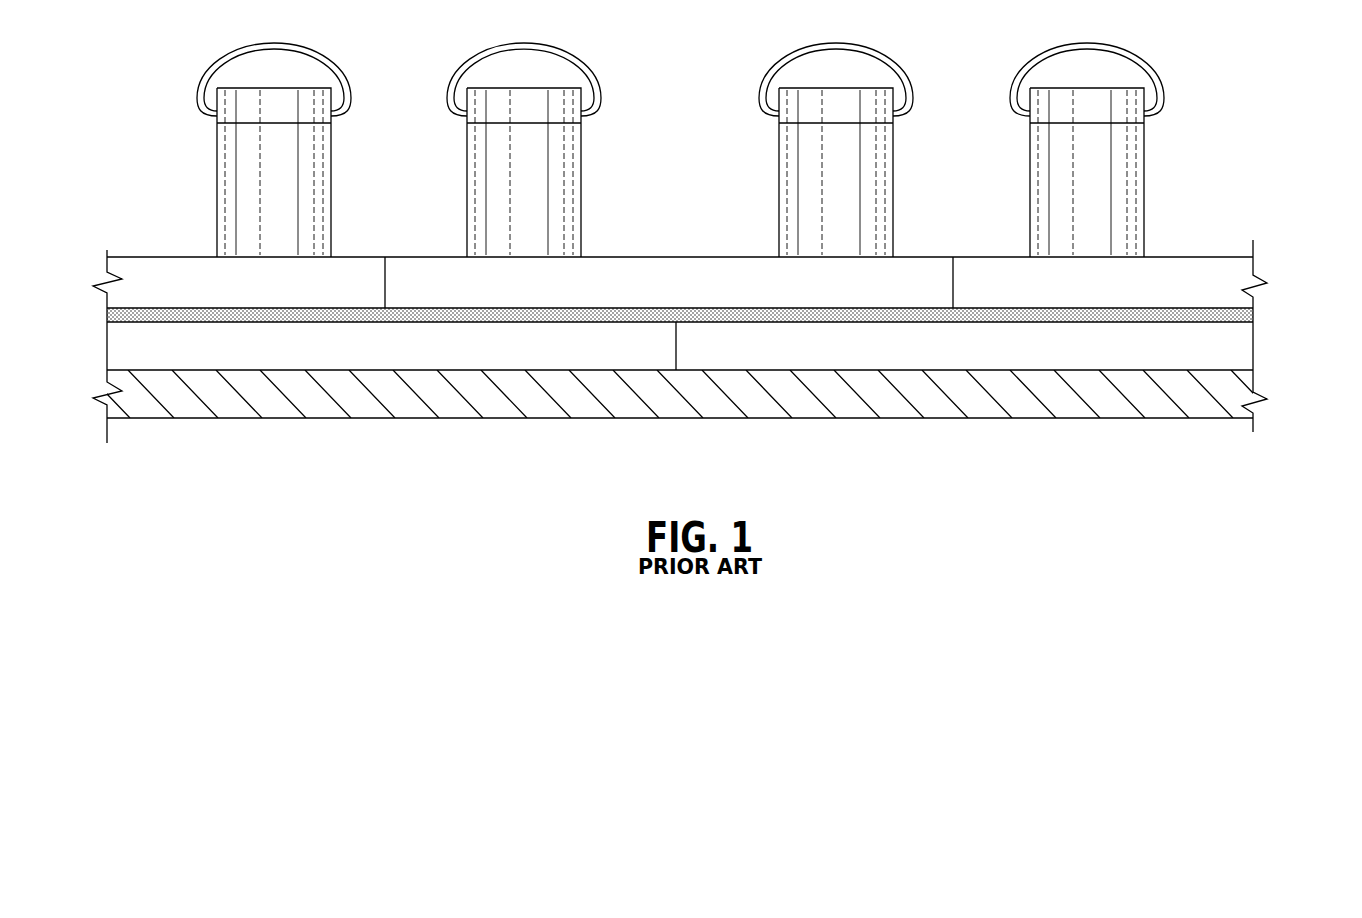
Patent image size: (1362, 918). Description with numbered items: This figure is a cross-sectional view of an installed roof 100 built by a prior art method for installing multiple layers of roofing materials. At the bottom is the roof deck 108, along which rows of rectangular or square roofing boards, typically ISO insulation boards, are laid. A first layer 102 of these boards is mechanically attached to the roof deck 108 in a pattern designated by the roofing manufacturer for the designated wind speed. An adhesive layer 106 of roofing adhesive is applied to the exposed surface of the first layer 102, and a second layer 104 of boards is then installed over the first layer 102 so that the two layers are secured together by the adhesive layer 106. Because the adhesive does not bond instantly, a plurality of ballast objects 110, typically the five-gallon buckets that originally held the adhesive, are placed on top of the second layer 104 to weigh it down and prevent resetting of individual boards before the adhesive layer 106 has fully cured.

The installed roof 100 is at (1275, 255).
The first layer 102 is at (1248, 358).
The second layer 104 is at (1253, 273).
The adhesive layer 106 is at (1207, 308).
The roof deck 108 is at (1230, 408).
The ballast objects 110 is at (331, 141).